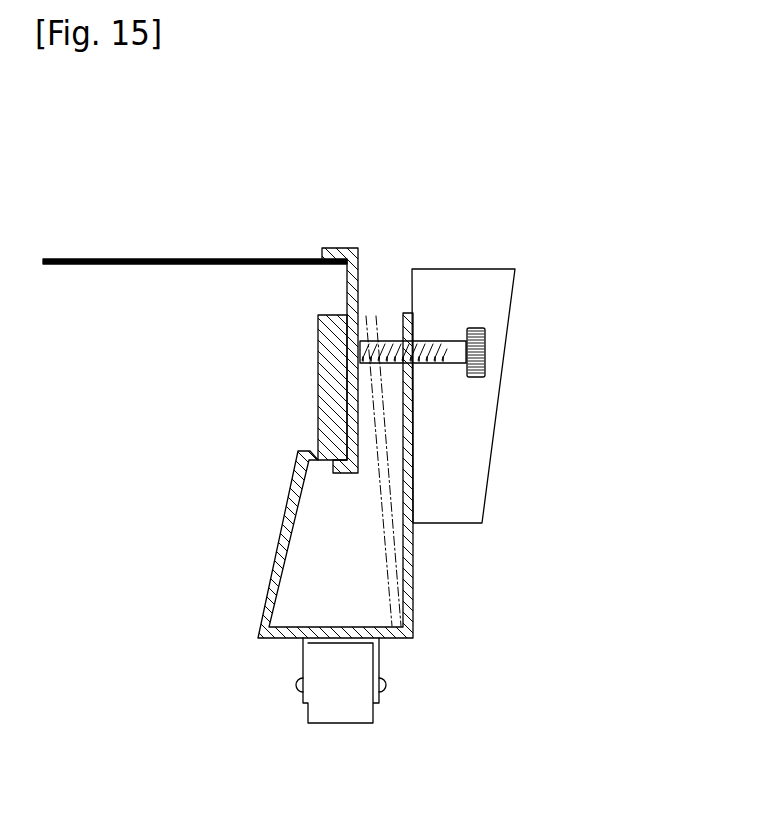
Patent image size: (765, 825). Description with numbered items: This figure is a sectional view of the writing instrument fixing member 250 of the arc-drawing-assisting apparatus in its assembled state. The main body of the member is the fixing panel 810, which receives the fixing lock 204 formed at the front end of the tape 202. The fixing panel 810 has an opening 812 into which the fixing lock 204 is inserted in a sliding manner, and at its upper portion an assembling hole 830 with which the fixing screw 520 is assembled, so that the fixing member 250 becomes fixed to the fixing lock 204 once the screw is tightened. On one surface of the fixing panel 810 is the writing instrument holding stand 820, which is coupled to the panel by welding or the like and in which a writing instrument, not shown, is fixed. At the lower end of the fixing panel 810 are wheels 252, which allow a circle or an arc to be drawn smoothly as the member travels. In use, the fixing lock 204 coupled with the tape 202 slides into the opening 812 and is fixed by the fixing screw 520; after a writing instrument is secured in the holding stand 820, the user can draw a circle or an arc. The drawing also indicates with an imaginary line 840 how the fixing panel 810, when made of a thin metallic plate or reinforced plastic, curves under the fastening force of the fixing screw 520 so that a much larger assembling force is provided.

The writing instrument fixing member 250 is at (522, 186).
The tape 202 is at (222, 258).
The fixing lock 204 is at (367, 257).
The fixing panel 810 is at (292, 472).
The opening 812 is at (330, 567).
The writing instrument holding stand 820 is at (502, 307).
The assembling hole 830 is at (413, 340).
The fixing screw 520 is at (486, 350).
The guide line 840 is at (387, 489).
The wheels 252 is at (353, 712).